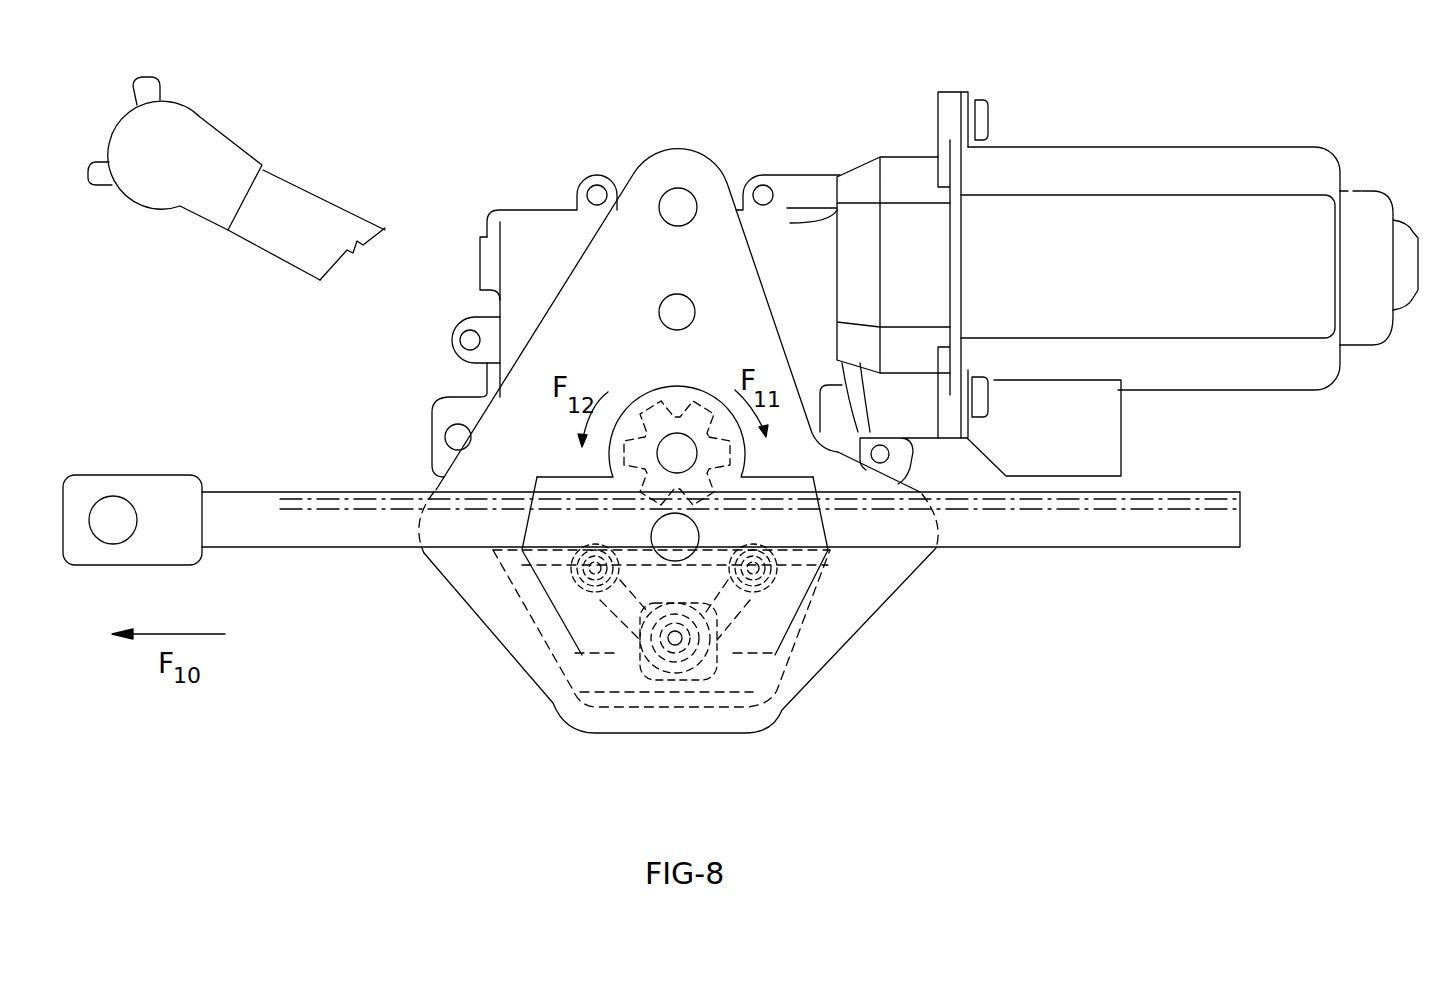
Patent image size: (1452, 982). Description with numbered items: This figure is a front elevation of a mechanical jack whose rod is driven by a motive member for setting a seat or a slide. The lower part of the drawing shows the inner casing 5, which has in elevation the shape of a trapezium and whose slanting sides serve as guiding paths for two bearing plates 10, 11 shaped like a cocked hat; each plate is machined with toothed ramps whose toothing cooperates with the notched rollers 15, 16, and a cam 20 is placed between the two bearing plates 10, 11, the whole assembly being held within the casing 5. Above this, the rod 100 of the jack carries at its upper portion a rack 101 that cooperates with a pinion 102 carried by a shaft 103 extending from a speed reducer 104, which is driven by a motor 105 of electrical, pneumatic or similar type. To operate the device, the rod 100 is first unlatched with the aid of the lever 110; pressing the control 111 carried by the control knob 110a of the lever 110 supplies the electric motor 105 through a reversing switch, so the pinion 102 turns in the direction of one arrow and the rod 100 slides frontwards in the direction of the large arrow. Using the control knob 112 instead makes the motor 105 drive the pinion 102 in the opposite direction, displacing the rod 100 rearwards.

The inner casing 5 is at (747, 697).
The bearing plate 10 is at (770, 630).
The bearing plate 11 is at (590, 633).
The notched roller 15 is at (787, 596).
The notched roller 16 is at (582, 575).
The cam 20 is at (677, 675).
The rod 100 is at (280, 540).
The rack 101 is at (380, 498).
The pinion 102 is at (697, 407).
The shaft 103 is at (672, 443).
The speed reducer 104 is at (532, 250).
The motor 105 is at (1215, 162).
The lever 110 is at (307, 210).
The control knob 110a is at (220, 140).
The control 111 is at (157, 87).
The control knob 112 is at (100, 183).